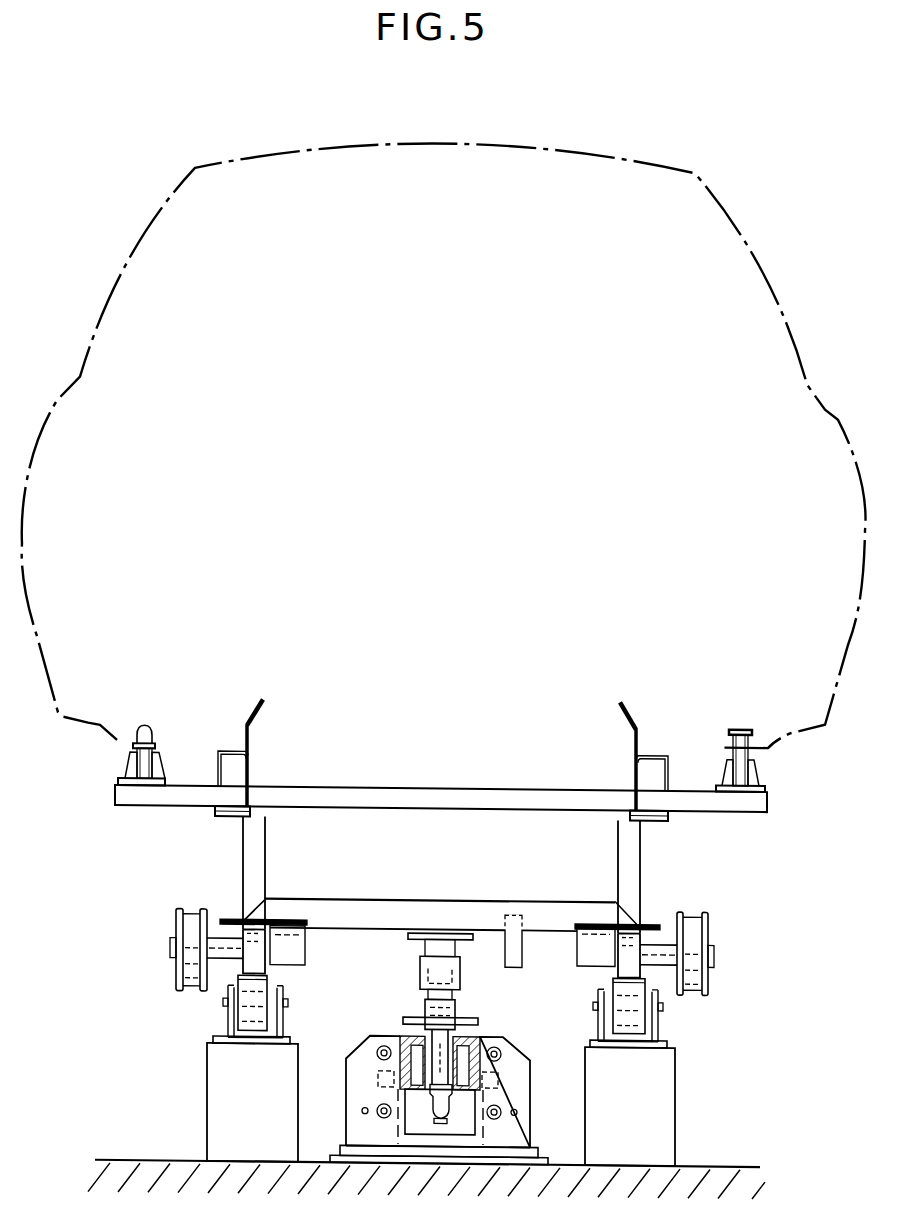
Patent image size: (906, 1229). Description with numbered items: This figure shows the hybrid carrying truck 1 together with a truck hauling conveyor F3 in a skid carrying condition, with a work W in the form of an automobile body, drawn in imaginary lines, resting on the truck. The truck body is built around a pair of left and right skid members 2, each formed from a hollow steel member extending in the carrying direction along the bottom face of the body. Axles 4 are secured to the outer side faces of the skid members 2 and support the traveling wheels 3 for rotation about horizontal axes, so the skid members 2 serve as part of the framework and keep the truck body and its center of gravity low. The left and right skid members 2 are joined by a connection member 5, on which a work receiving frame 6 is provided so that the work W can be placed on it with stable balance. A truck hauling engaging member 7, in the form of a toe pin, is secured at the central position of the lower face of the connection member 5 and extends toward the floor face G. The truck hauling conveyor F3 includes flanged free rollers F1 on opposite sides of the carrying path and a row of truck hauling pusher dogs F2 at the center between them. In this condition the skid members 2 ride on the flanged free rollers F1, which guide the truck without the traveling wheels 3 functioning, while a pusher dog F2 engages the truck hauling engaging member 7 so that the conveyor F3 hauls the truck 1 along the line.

The work W is at (463, 140).
The hybrid carrying truck 1 is at (703, 836).
The skid member 2 is at (253, 955).
The traveling wheel 3 is at (192, 925).
The axle 4 is at (220, 946).
The connection member 5 is at (442, 918).
The work receiving frame 6 is at (750, 796).
The truck hauling engaging member 7 is at (440, 944).
The flanged free roller F1 is at (250, 1002).
The truck hauling pusher dog F2 is at (430, 1005).
The truck hauling conveyor F3 is at (695, 1087).
The floor face G is at (720, 1163).